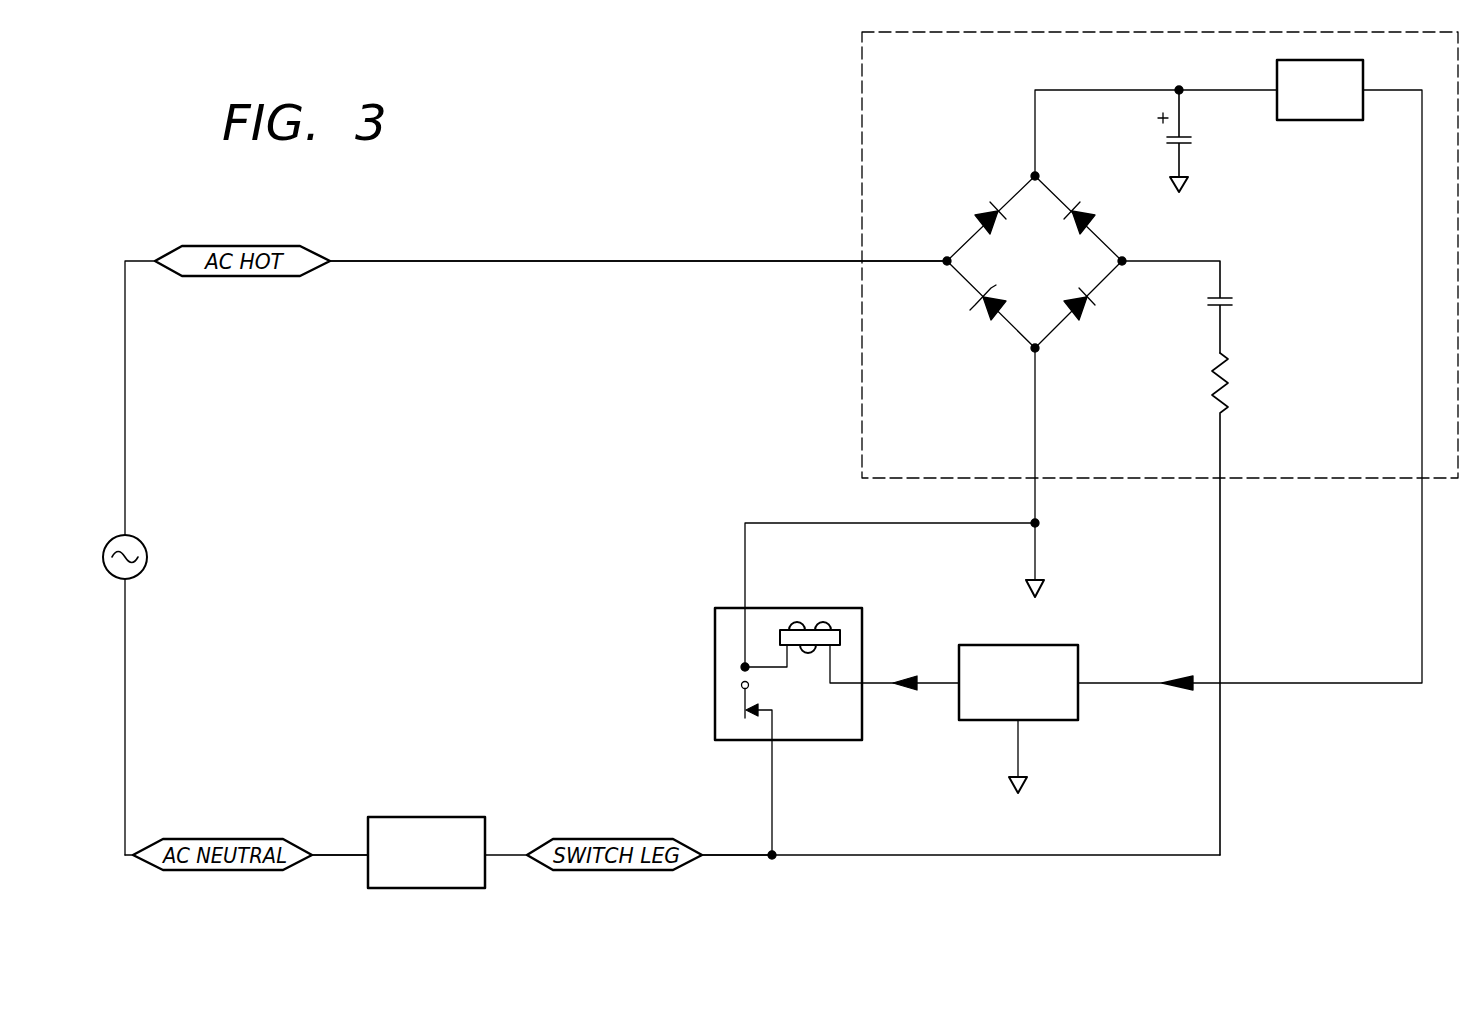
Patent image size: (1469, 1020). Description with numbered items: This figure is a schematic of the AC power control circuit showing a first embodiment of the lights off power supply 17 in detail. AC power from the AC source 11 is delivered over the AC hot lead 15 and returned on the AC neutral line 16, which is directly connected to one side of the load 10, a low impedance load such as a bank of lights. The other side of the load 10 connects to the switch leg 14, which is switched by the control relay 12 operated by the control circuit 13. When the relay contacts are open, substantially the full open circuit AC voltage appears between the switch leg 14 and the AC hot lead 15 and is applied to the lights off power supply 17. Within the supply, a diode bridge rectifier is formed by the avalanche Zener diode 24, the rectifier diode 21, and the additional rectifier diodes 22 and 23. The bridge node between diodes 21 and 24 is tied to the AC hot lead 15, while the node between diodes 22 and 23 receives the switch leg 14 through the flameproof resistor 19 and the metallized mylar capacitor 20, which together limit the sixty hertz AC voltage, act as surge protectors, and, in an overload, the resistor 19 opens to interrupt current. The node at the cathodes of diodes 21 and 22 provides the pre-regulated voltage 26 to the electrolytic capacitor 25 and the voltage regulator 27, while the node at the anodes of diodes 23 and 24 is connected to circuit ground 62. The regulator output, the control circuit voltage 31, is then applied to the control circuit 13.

The load 10 is at (427, 816).
The AC source 11 is at (147, 565).
The control relay 12 is at (715, 637).
The control circuit 13 is at (1043, 720).
The switch leg 14 is at (743, 853).
The AC hot lead 15 is at (560, 259).
The AC neutral line 16 is at (340, 852).
The lights off power supply 17 is at (860, 190).
The flameproof resistor 19 is at (1227, 387).
The mylar capacitor 20 is at (1233, 303).
The rectifier diode 21 is at (980, 220).
The rectifier diode 22 is at (1087, 210).
The rectifier diode 23 is at (1082, 313).
The avalanche Zener diode 24 is at (995, 311).
The electrolytic capacitor 25 is at (1191, 137).
The pre-regulated voltage 26 is at (1033, 174).
The voltage regulator 27 is at (1365, 72).
The control circuit voltage 31 is at (1123, 684).
The circuit ground 62 is at (773, 521).